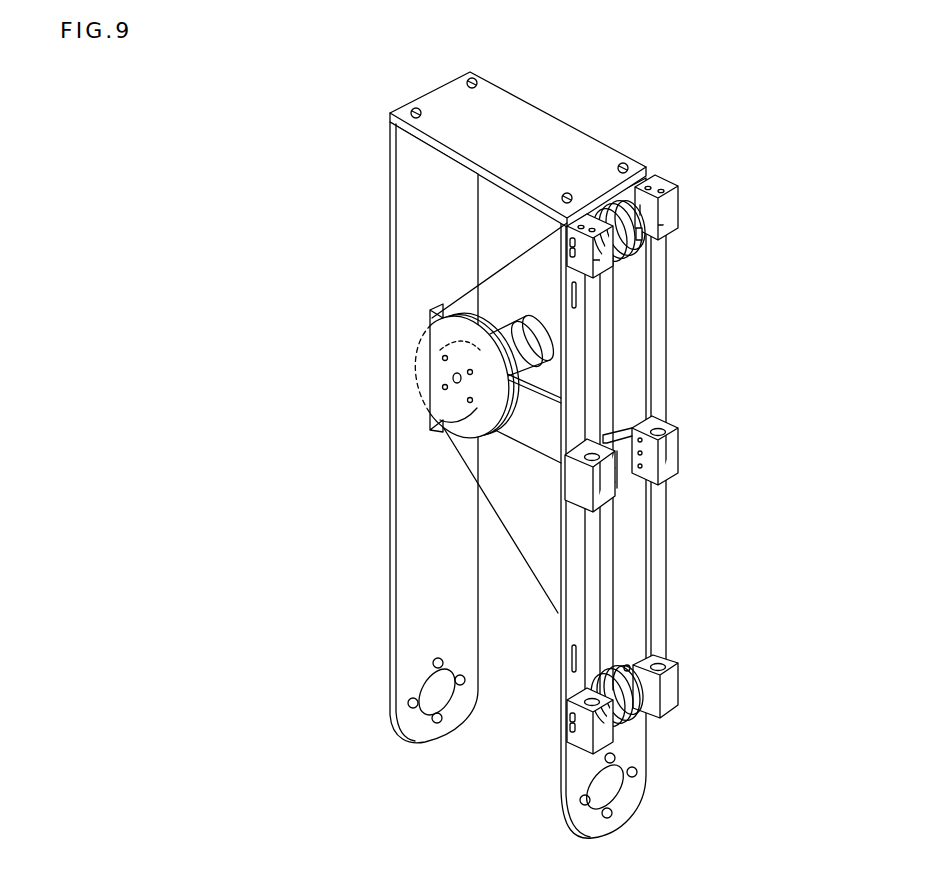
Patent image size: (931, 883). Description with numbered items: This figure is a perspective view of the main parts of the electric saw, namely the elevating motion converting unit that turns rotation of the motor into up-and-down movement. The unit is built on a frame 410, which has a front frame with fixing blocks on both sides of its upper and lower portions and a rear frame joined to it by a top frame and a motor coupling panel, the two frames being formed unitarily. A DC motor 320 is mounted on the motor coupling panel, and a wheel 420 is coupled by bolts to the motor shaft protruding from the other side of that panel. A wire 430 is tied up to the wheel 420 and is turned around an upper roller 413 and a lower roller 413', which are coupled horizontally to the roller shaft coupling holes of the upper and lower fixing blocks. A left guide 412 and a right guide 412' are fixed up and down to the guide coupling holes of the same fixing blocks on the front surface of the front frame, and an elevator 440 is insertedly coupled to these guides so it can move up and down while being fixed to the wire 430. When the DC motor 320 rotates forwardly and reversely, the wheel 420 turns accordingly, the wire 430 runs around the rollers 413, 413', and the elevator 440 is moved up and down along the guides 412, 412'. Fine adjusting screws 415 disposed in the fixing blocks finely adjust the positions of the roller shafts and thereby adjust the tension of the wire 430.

The DC motor 320 is at (488, 328).
The frame 410 is at (565, 337).
The left guide 412 is at (664, 482).
The right guide 412' is at (714, 447).
The upper roller 413 is at (651, 182).
The lower roller 413' is at (653, 716).
The fine adjusting screw 415 is at (643, 237).
The wheel 420 is at (433, 317).
The wire 430 is at (616, 637).
The elevator 440 is at (675, 448).